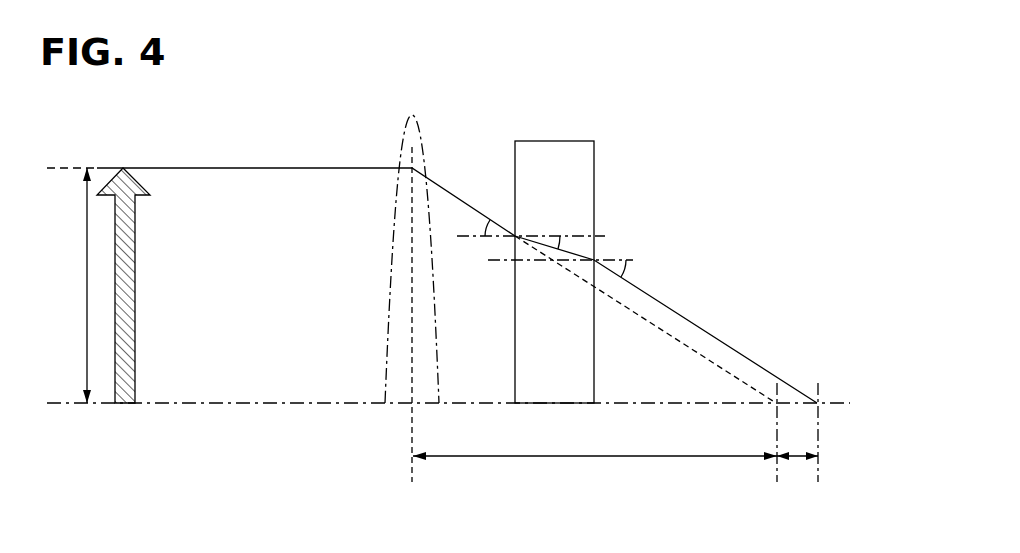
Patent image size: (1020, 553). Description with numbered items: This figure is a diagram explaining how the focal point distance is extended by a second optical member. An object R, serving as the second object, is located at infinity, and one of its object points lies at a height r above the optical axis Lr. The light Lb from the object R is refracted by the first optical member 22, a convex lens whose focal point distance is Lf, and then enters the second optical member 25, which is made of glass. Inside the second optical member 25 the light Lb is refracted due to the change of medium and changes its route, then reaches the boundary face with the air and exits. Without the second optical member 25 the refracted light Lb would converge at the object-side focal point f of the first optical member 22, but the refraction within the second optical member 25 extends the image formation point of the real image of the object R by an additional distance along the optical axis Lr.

The first optical member 22 is at (420, 135).
The second optical member 25 is at (568, 141).
The light Lb is at (283, 162).
The optical axis Lr is at (207, 425).
The object R is at (124, 403).
The height from the optical axis to one object point r is at (80, 285).
The object-side focal point f is at (759, 428).
The focal point distance Lf is at (595, 476).